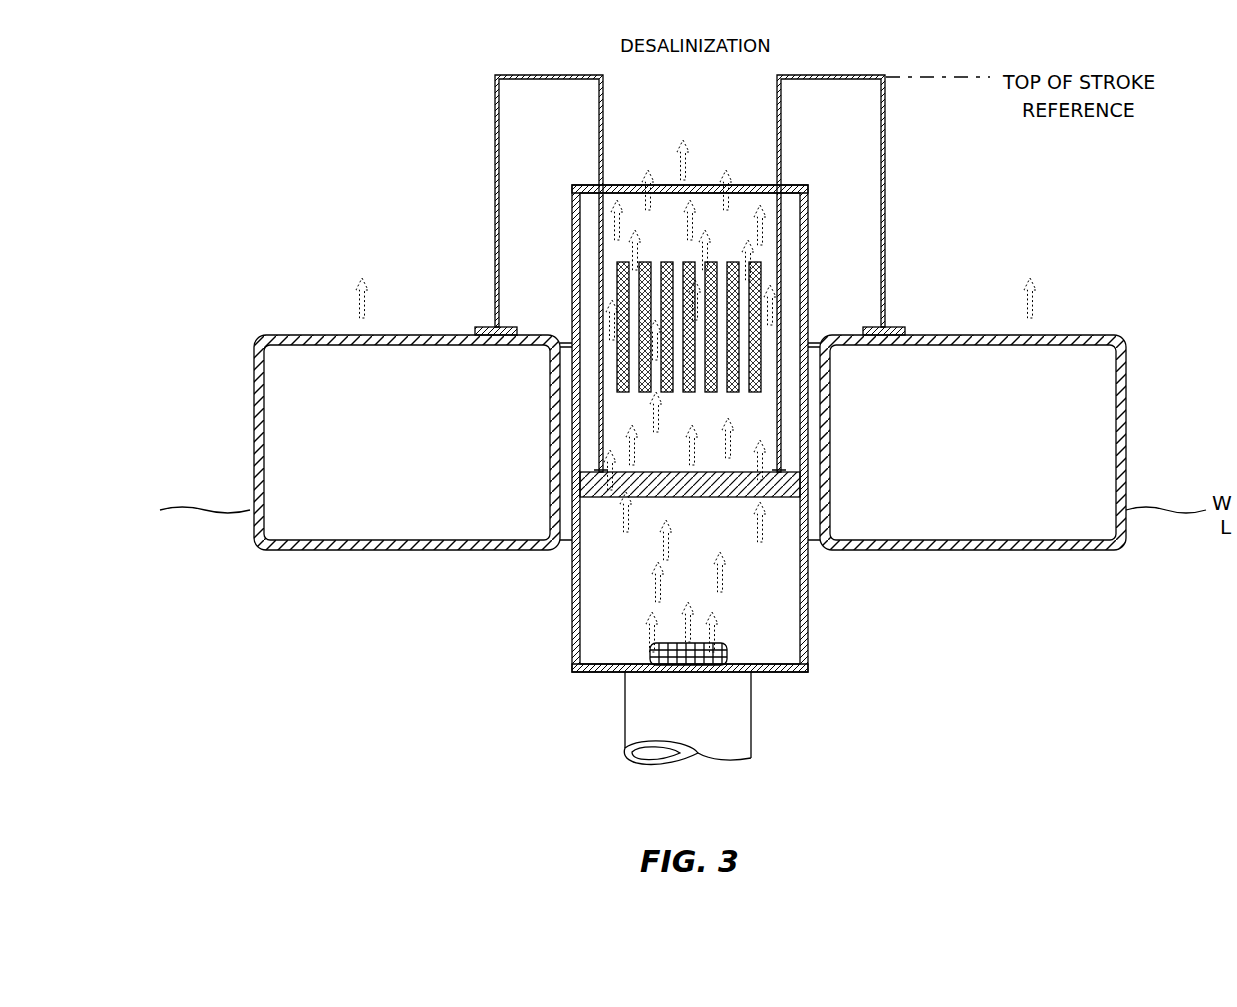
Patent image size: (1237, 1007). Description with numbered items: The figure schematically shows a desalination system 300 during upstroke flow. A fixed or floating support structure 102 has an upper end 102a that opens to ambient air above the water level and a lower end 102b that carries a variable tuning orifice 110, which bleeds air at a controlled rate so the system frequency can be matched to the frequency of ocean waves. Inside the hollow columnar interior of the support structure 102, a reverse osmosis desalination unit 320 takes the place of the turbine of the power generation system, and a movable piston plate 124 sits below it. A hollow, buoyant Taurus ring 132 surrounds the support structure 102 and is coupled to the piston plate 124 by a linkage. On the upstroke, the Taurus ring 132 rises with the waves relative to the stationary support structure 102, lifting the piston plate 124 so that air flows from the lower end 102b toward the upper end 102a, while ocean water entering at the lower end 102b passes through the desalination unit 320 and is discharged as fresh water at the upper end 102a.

The desalination system 300 is at (186, 92).
The support structure 102 is at (572, 612).
The upper end 102a is at (798, 188).
The lower end 102b is at (808, 672).
The variable tuning orifice 110 is at (727, 652).
The piston plate 124 is at (664, 498).
The Taurus ring 132 is at (1016, 551).
The reverse osmosis desalination unit 320 is at (690, 393).